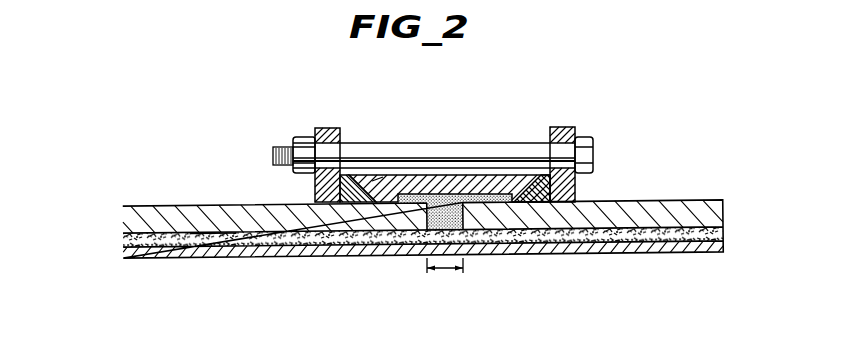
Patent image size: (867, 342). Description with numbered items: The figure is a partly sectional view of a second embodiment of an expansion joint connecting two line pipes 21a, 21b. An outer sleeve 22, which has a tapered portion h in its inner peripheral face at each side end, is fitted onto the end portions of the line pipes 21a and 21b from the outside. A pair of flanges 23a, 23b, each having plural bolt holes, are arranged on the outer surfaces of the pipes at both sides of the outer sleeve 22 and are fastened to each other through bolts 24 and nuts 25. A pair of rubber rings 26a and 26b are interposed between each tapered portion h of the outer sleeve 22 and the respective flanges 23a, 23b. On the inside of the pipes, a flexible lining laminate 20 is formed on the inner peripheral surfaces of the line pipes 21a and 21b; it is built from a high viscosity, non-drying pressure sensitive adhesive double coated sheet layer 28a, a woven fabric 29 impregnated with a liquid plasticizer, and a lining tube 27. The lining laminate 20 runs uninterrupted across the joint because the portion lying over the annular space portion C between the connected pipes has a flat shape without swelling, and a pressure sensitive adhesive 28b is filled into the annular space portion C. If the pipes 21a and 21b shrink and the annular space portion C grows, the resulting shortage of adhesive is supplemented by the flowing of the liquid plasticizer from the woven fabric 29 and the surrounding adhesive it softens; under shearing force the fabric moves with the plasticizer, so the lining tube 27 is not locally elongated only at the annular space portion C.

The flexible lining laminate 20 is at (666, 253).
The line pipe 21a is at (122, 226).
The line pipe 21b is at (722, 205).
The outer sleeve 22 is at (464, 176).
The flange 23a is at (327, 127).
The flange 23b is at (562, 126).
The bolt 24 is at (584, 136).
The nut 25 is at (300, 136).
The rubber ring 26a is at (356, 183).
The rubber ring 26b is at (527, 191).
The lining tube 27 is at (257, 251).
The pressure sensitive adhesive double coated sheet layer 28a is at (170, 249).
The pressure sensitive adhesive 28b is at (432, 221).
The woven fabric 29 is at (211, 241).
The tapered portion h is at (383, 177).
The annular space portion C is at (445, 276).